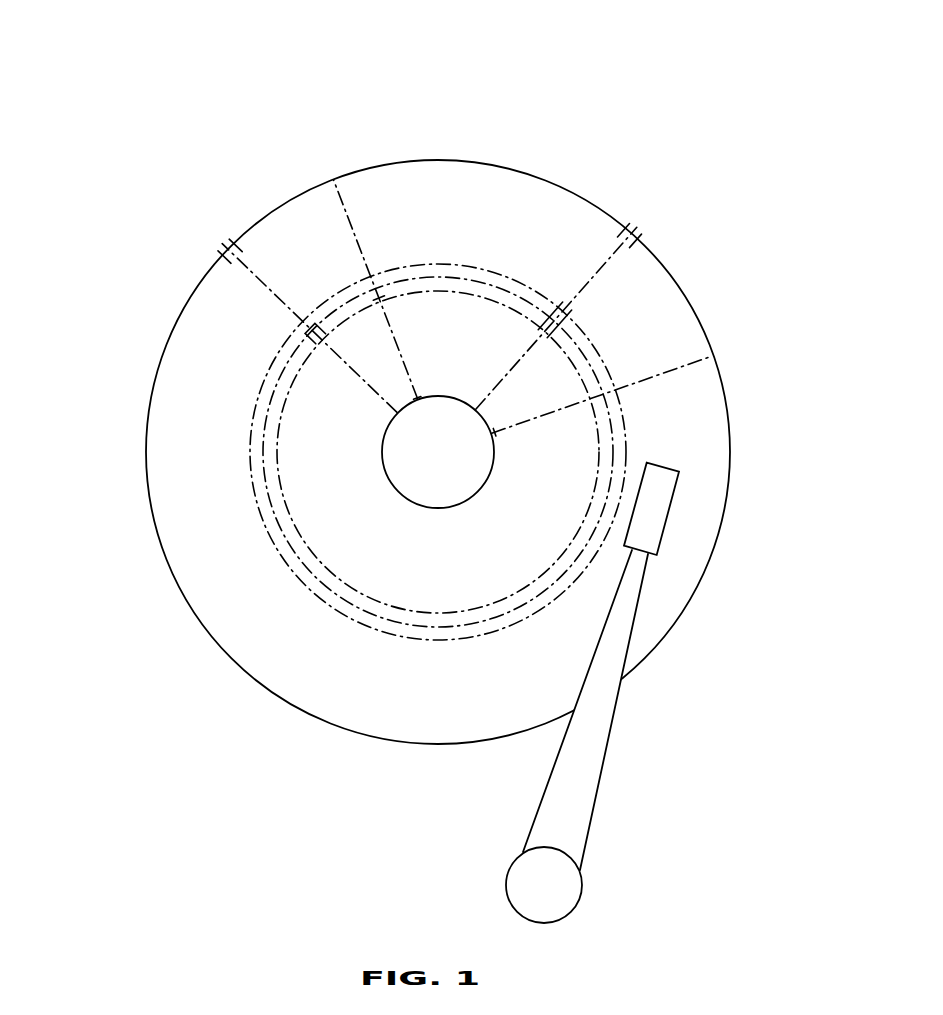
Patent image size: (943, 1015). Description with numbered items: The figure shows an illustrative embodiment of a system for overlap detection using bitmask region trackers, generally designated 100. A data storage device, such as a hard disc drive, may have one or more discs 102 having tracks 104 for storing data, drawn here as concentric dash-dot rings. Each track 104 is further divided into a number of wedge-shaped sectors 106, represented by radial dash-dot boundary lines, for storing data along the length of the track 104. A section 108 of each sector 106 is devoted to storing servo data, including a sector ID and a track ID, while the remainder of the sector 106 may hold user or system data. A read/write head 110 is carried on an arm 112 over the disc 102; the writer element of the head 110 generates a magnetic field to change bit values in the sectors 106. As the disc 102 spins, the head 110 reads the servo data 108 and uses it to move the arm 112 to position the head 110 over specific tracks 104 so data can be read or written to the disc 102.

The system for overlap detection using bitmask region trackers 100 is at (370, 68).
The disc 102 is at (167, 335).
The tracks 104 is at (308, 558).
The wedge-shaped sectors 106 is at (320, 205).
The section 108 is at (232, 258).
The head 110 is at (657, 488).
The arm 112 is at (573, 794).